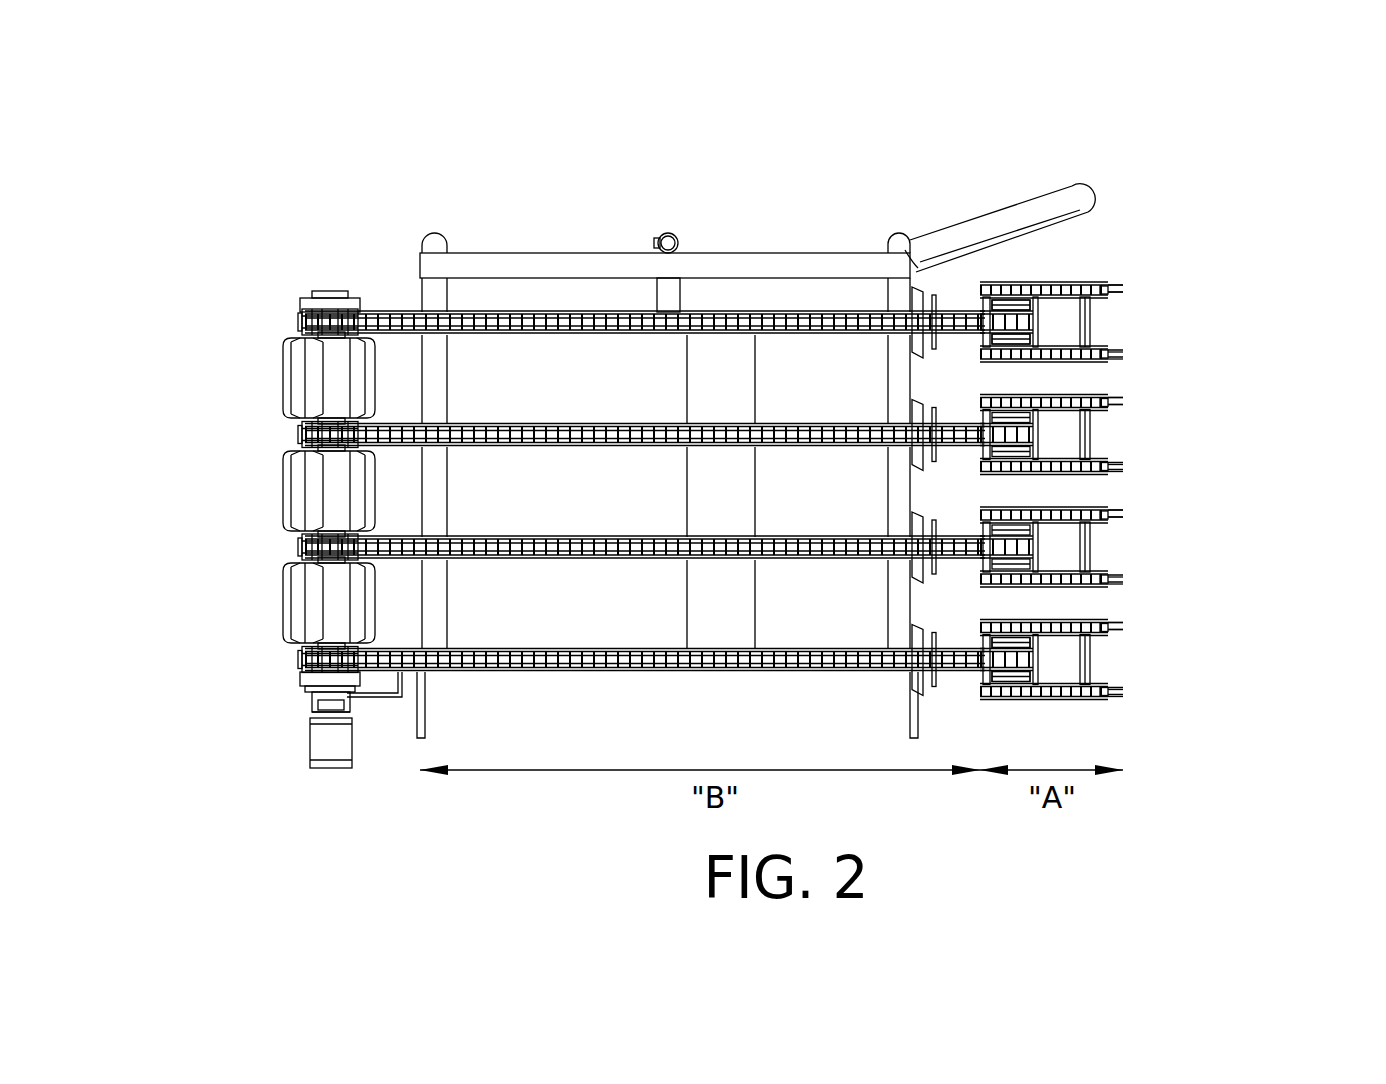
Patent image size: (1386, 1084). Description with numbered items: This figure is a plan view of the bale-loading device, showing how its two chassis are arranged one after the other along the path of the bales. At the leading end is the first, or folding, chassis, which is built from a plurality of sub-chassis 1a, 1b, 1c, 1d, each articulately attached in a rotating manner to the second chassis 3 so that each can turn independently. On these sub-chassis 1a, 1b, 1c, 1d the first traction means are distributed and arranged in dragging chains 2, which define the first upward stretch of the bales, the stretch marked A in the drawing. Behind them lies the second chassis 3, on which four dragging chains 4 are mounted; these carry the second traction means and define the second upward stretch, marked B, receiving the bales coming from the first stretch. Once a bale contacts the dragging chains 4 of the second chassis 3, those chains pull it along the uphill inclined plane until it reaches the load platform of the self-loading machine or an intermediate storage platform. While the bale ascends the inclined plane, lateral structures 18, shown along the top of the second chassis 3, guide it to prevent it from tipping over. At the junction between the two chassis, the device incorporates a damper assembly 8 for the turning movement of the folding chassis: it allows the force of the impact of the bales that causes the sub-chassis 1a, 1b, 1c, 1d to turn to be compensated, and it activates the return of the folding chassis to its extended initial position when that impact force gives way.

The sub-chassis 1a is at (1114, 658).
The sub-chassis 1b is at (1110, 546).
The sub-chassis 1c is at (1110, 433).
The sub-chassis 1d is at (1110, 321).
The dragging chains 2 is at (1123, 290).
The second chassis 3 is at (715, 400).
The dragging chains 4 is at (508, 433).
The damper assembly 8 is at (1047, 325).
The lateral structures 18 is at (465, 265).